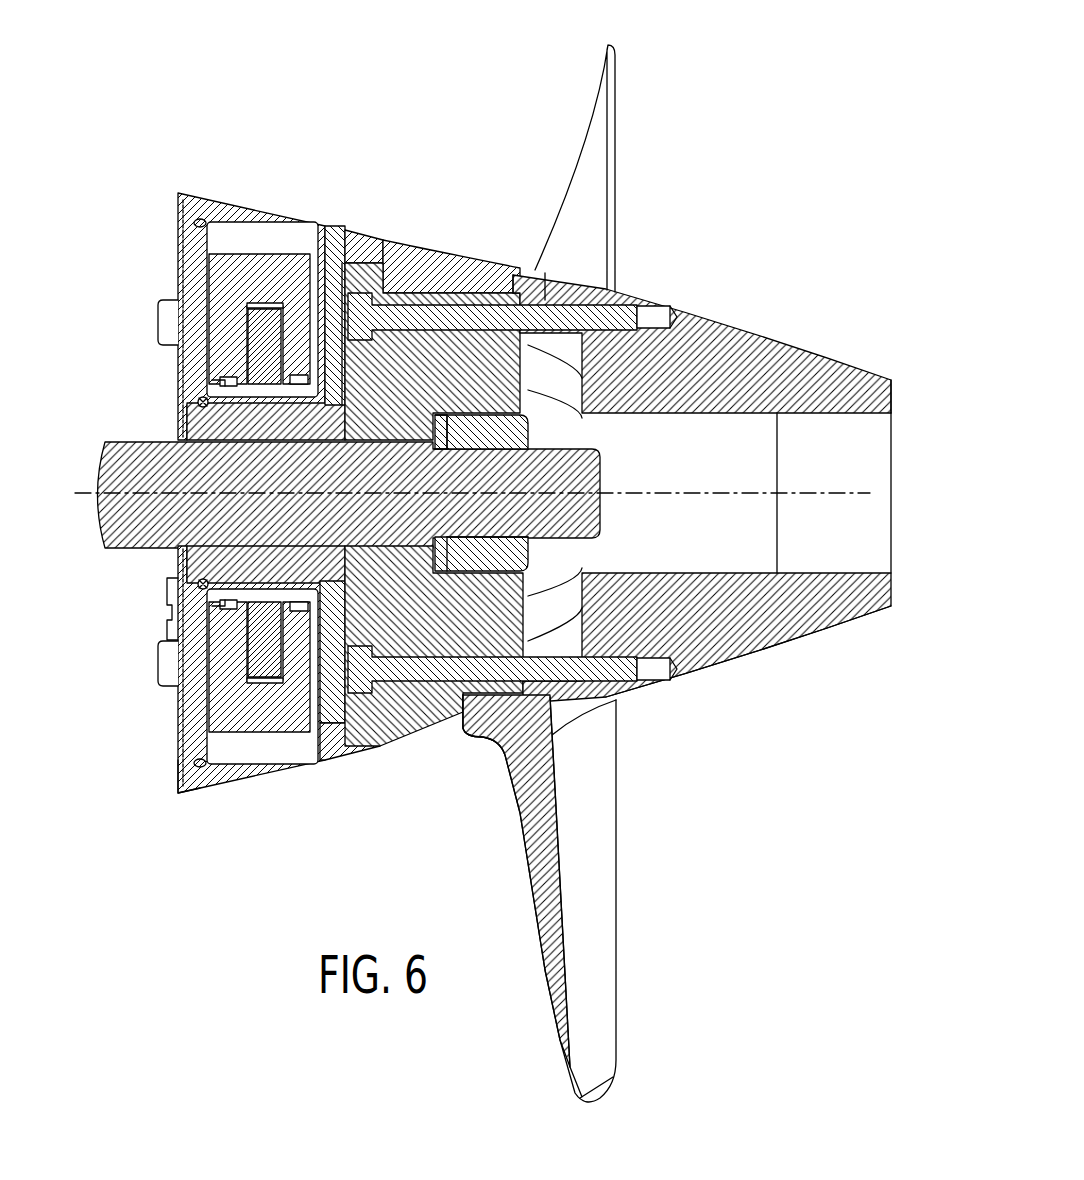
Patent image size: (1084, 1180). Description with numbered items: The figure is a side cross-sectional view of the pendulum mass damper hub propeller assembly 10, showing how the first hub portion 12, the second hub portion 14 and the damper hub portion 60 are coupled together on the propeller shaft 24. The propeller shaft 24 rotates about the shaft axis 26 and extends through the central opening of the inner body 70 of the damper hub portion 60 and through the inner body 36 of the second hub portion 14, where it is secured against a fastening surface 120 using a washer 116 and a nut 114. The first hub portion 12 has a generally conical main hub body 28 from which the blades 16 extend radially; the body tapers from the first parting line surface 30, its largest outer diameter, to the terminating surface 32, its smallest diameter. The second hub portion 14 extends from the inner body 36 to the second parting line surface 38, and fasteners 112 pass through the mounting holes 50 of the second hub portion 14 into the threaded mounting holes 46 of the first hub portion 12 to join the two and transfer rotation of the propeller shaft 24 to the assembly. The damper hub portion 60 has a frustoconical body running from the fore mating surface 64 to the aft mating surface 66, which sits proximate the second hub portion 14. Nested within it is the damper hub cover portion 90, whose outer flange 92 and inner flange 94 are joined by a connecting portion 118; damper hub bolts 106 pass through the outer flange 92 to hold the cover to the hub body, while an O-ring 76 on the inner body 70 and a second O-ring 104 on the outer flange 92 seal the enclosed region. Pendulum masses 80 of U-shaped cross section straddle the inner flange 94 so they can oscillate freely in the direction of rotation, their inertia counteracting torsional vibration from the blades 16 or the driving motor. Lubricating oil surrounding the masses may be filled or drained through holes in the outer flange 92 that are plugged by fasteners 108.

The propeller hub assembly 10 is at (140, 122).
The first hub portion 12 is at (796, 316).
The second hub portion 14 is at (467, 245).
The blades 16 is at (618, 160).
The propeller shaft 24 is at (122, 450).
The shaft axis 26 is at (813, 492).
The main hub body 28 is at (737, 666).
The first parting line surface 30 is at (466, 733).
The terminating surface 32 is at (891, 385).
The inner body 36 is at (343, 640).
The second parting line surface 38 is at (523, 276).
The mounting holes 46 is at (656, 320).
The mounting holes 50 is at (345, 300).
The damper hub portion 60 is at (356, 792).
The fore mating surface 64 is at (176, 778).
The aft mating surface 66 is at (392, 258).
The inner body 70 is at (205, 430).
The O-ring 76 is at (200, 401).
The pendulum masses 80 is at (258, 270).
The damper hub cover portion 90 is at (168, 263).
The outer flange 92 is at (176, 722).
The inner flange 94 is at (288, 350).
The O-ring 104 is at (198, 220).
The damper hub bolts 106 is at (160, 322).
The fasteners 108 is at (165, 620).
The fasteners 112 is at (440, 318).
The nut 114 is at (520, 560).
The washer 116 is at (440, 415).
The connecting portion 118 is at (222, 385).
The fastening surface 120 is at (442, 560).